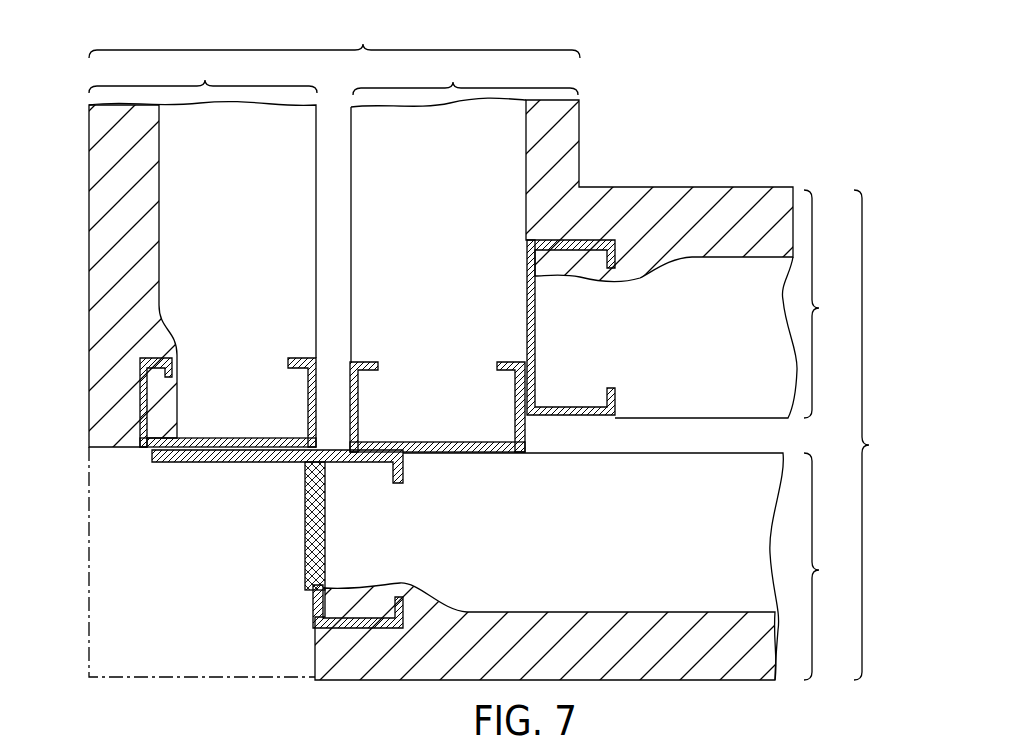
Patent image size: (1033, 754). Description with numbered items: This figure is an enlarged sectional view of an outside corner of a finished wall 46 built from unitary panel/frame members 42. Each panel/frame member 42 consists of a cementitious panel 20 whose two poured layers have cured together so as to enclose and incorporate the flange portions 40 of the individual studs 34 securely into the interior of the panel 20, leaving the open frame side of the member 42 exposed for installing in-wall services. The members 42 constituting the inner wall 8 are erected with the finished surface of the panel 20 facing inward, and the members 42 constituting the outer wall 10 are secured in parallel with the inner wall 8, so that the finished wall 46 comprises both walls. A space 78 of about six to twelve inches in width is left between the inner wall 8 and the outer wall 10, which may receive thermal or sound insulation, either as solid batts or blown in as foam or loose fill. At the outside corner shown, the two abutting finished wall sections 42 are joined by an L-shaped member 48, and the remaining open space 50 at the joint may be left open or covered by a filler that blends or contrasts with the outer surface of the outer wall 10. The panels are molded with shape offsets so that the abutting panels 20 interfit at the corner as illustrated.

The inner wall 8 is at (595, 235).
The outer wall 10 is at (471, 364).
The panel 20 is at (89, 170).
The stud 34 is at (212, 437).
The flange portion 40 is at (152, 388).
The panel/frame member 42 is at (66, 407).
The finished wall 46 is at (499, 345).
The L-shaped member 48 is at (255, 458).
The open space 50 is at (177, 596).
The space 78 is at (335, 200).